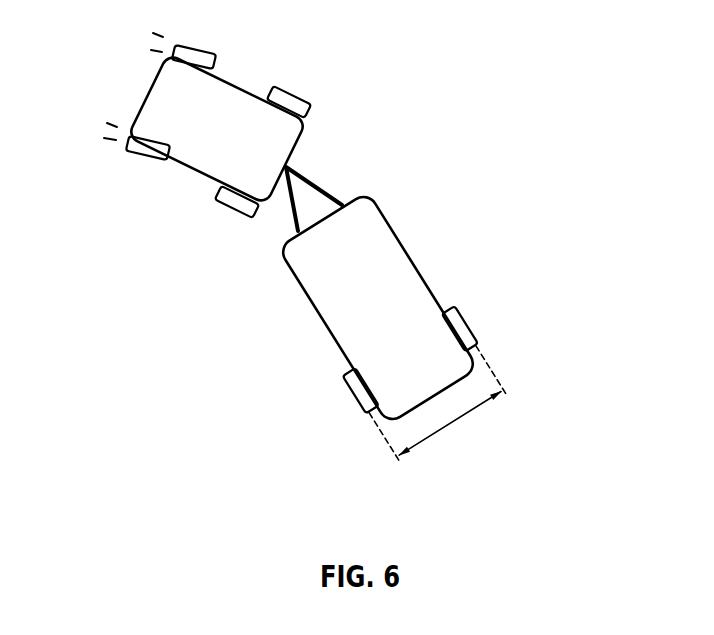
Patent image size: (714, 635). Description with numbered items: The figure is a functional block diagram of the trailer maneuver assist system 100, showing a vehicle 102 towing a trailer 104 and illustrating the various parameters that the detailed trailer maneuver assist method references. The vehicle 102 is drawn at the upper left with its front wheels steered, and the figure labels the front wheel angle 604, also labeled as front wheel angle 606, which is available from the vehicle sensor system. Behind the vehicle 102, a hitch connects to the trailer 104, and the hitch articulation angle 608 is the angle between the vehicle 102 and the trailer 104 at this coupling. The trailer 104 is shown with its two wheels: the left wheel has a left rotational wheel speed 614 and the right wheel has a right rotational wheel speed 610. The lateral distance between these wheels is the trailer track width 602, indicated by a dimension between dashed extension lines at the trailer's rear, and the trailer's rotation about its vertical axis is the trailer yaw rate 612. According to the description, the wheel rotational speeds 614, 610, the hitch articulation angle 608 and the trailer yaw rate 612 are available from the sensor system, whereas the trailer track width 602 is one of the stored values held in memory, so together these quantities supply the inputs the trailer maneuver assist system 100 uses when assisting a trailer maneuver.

The trailer maneuver assist system 100 is at (493, 42).
The vehicle 102 is at (163, 97).
The trailer 104 is at (373, 328).
The trailer track width 602 is at (515, 460).
The front wheel angle 604 is at (83, 143).
The front wheel angle 606 is at (222, 98).
The hitch articulation angle 608 is at (348, 228).
The right rotational wheel speed 610 is at (510, 313).
The trailer yaw rate 612 is at (357, 347).
The left rotational wheel speed 614 is at (337, 435).